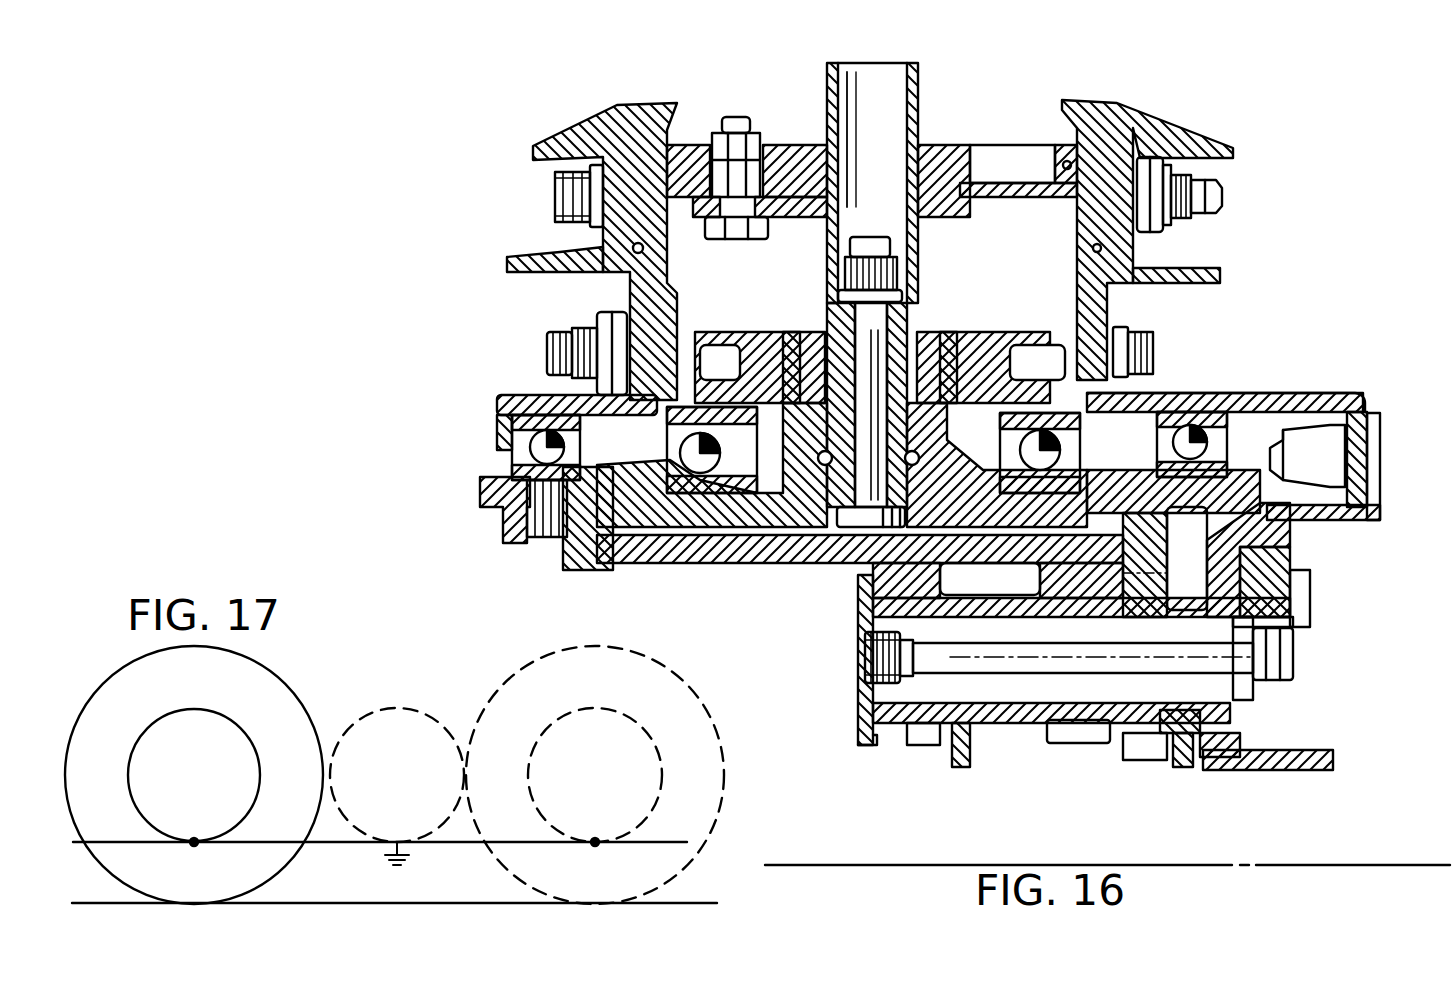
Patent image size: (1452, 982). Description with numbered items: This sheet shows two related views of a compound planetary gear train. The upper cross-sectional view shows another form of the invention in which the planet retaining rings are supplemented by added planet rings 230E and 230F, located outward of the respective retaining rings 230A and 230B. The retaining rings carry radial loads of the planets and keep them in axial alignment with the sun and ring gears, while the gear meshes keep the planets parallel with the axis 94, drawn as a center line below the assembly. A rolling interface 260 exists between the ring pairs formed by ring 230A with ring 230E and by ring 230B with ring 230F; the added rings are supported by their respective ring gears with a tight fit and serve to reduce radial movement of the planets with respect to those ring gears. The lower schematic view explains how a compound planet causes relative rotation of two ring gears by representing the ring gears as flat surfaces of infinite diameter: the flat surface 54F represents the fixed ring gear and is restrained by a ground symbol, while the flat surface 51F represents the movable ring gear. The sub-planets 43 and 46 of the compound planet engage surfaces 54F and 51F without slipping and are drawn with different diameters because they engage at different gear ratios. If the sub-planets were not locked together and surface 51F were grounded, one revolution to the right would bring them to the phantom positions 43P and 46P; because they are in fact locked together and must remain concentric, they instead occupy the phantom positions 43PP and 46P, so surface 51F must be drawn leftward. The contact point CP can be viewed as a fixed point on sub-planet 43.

In FIG. 17, the sub-planet 46 is at (270, 673).
In FIG. 17, the sub-planet 43 is at (212, 711).
In FIG. 17, the phantom position 43P is at (420, 710).
In FIG. 17, the phantom position 46P is at (565, 650).
In FIG. 17, the phantom position 43PP is at (598, 710).
In FIG. 17, the flat surface 54F is at (317, 843).
In FIG. 17, the flat surface 51F is at (405, 903).
In FIG. 17, the contact point CP is at (194, 843).
In FIG. 16, the planet ring 230E is at (870, 567).
In FIG. 16, the rolling interface 260 is at (858, 600).
In FIG. 16, the retaining ring 230A is at (858, 629).
In FIG. 16, the planet ring 230F is at (1284, 561).
In FIG. 16, the retaining ring 230B is at (1300, 604).
In FIG. 16, the axis 94 is at (1197, 865).